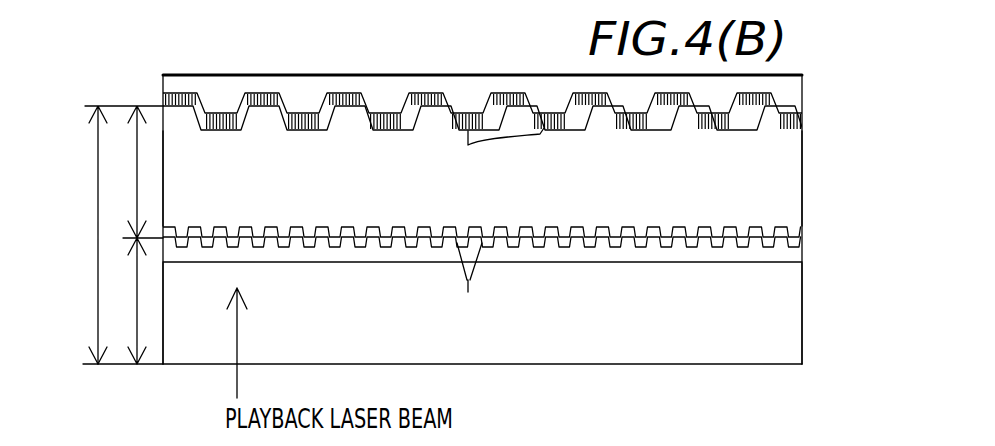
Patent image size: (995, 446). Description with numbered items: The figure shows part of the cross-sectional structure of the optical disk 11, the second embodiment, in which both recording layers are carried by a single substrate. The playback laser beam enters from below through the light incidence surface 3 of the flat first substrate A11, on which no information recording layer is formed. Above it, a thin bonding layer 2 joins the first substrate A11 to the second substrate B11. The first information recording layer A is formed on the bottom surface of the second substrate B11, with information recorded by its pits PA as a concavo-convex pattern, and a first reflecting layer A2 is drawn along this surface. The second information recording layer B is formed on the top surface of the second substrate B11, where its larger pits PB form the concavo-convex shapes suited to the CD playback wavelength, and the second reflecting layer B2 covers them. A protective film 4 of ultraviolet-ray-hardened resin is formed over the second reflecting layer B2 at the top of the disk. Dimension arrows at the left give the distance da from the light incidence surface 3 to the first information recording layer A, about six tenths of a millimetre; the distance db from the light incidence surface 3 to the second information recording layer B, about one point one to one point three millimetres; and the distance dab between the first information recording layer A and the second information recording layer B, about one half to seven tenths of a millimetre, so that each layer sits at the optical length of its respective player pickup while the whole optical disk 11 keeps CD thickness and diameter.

The optical disk 11 is at (72, 68).
The protective film 4 is at (793, 88).
The second reflecting layer B2 is at (800, 113).
The second information recording layer B is at (513, 109).
The second substrate B11 is at (788, 177).
The first recording layer (A) pits A2 is at (800, 222).
The first information recording layer A is at (512, 223).
The bonding layer 2 is at (793, 253).
The first substrate A11 is at (783, 318).
The light incidence surface 3 is at (783, 370).
The pits PB is at (498, 153).
The pits PA is at (467, 286).
The distance between first and second information recording layers dab is at (137, 140).
The distance from light incidence surface to second information recording layer db is at (97, 298).
The distance from light incidence surface to first information recording layer da is at (135, 323).